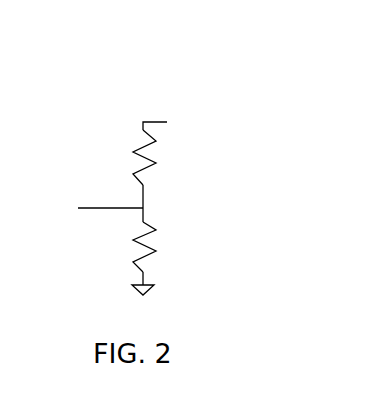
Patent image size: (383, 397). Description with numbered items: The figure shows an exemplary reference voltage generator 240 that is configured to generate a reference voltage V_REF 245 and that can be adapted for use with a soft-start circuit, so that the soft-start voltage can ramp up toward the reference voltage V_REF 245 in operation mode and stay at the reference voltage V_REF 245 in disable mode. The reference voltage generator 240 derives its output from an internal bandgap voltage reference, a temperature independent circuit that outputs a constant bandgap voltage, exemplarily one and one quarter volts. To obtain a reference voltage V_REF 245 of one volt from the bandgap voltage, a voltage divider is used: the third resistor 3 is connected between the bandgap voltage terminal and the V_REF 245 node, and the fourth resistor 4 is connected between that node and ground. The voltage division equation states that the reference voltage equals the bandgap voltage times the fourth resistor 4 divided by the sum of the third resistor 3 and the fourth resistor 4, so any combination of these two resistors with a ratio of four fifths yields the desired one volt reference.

The reference voltage generator 240 is at (72, 61).
The reference voltage V_REF 245 is at (183, 196).
The resistor R3 3 is at (124, 157).
The resistor R4 4 is at (124, 247).